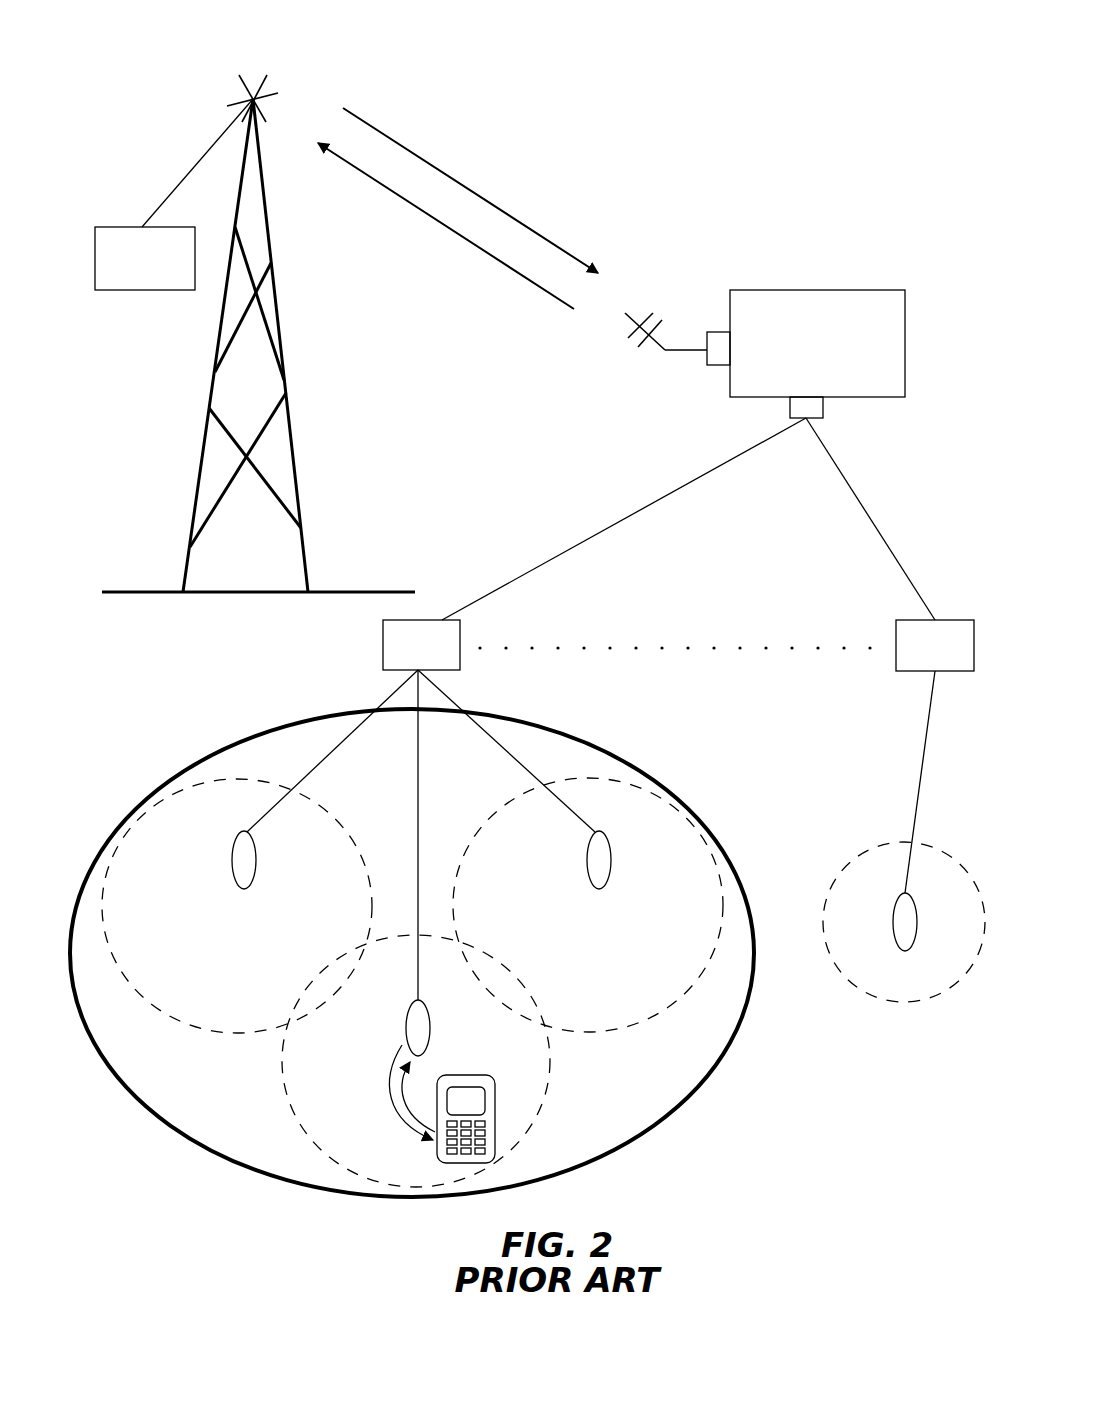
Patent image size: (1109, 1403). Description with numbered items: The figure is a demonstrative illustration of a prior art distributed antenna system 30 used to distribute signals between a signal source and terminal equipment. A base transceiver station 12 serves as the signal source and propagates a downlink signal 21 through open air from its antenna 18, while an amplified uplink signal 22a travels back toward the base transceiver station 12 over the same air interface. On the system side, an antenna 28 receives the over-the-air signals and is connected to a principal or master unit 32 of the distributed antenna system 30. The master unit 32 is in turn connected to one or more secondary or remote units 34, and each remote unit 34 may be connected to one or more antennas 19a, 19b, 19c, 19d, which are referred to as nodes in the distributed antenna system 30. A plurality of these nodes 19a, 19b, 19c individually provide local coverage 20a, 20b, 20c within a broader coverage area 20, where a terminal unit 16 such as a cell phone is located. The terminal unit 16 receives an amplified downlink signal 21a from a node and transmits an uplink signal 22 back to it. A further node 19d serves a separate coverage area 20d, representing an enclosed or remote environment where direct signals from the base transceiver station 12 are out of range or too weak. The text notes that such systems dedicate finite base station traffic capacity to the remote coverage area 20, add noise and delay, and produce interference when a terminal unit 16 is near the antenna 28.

The base transceiver station 12 is at (150, 308).
The terminal unit 16 is at (502, 1115).
The antenna 18 is at (293, 82).
The antenna 19a is at (232, 875).
The antenna 19b is at (405, 1020).
The antenna 19c is at (608, 880).
The antenna 19d is at (893, 913).
The coverage area 20 is at (708, 1083).
The local coverage 20a is at (173, 1018).
The local coverage 20b is at (302, 1127).
The local coverage 20c is at (718, 935).
The coverage area 20d is at (907, 1002).
The downlink signal 21 is at (470, 190).
The amplified downlink signal 21a is at (381, 1092).
The uplink signal 22 is at (416, 1097).
The amplified uplink signal 22a is at (446, 226).
The antenna 28 is at (661, 293).
The distributed antenna system 30 is at (765, 231).
The master unit 32 is at (804, 265).
The remote unit 34 is at (442, 603).